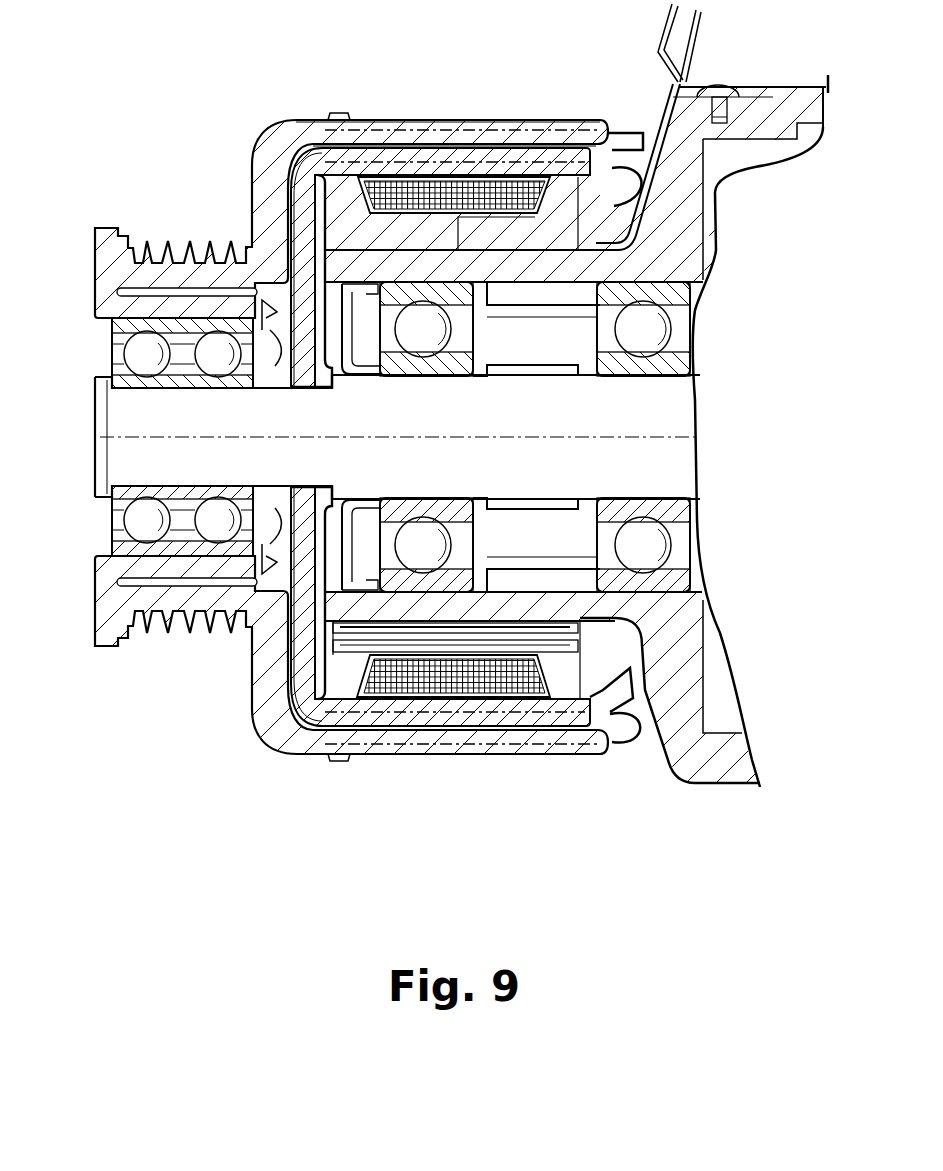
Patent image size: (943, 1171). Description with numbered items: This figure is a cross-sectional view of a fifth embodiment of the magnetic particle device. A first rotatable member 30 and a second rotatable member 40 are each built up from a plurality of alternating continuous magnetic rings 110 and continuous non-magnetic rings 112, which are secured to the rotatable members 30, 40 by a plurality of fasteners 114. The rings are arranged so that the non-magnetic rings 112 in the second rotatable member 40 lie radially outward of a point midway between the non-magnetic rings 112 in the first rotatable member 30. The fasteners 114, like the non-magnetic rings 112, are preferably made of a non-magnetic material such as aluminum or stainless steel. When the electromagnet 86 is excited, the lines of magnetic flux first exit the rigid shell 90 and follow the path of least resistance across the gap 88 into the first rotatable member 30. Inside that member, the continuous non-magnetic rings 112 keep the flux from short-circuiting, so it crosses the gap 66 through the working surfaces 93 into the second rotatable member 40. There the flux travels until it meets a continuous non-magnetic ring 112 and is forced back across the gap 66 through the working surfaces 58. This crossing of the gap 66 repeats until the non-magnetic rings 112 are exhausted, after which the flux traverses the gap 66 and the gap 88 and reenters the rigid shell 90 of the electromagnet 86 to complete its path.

The first rotatable member 30 is at (287, 392).
The second rotatable member 40 is at (108, 224).
The working surfaces 58 is at (383, 143).
The gap 66 is at (298, 149).
The electromagnet 86 is at (600, 221).
The gap 88 is at (607, 693).
The rigid shell 90 is at (322, 199).
The working surfaces 93 is at (312, 117).
The continuous magnetic rings 110 is at (483, 153).
The continuous non-magnetic rings 112 is at (435, 145).
The fasteners 114 is at (308, 709).